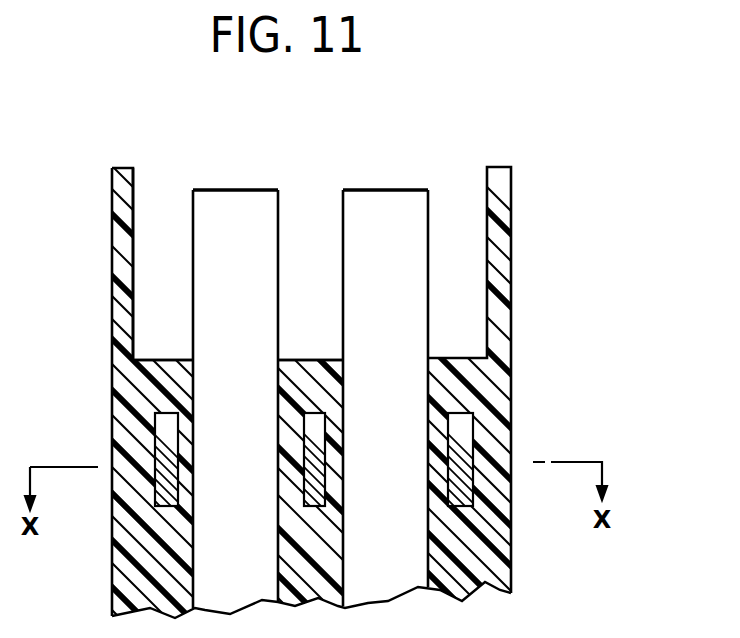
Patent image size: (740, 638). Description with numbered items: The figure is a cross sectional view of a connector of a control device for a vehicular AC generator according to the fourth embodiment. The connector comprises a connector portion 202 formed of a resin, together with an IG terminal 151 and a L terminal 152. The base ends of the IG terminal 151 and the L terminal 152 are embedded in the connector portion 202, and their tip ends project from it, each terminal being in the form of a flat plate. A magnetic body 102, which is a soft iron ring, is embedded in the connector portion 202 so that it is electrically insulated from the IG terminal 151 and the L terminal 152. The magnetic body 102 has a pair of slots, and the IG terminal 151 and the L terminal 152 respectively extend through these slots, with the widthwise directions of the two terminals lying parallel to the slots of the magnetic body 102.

The IG terminal IG is at (212, 250).
The IG terminal 151 is at (233, 222).
The L terminal L is at (358, 252).
The L terminal 152 is at (388, 213).
The magnetic body 102 is at (470, 438).
The connector portion 202 is at (478, 548).